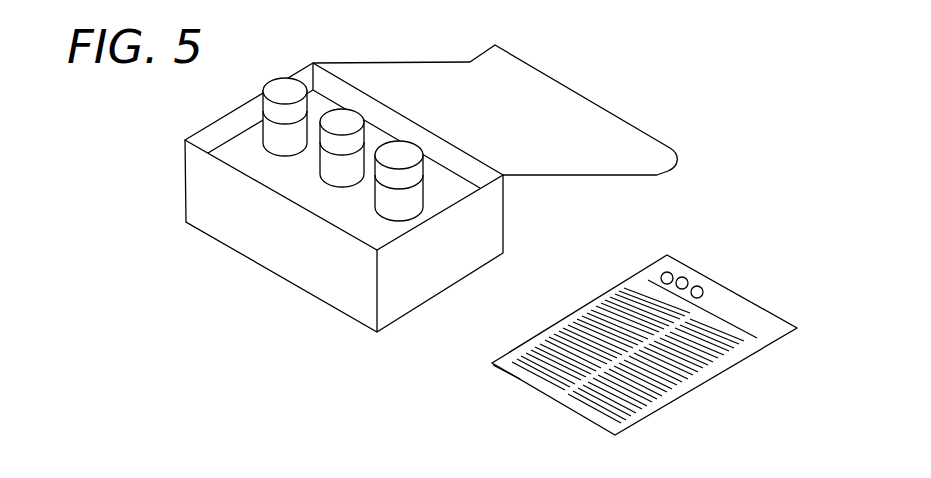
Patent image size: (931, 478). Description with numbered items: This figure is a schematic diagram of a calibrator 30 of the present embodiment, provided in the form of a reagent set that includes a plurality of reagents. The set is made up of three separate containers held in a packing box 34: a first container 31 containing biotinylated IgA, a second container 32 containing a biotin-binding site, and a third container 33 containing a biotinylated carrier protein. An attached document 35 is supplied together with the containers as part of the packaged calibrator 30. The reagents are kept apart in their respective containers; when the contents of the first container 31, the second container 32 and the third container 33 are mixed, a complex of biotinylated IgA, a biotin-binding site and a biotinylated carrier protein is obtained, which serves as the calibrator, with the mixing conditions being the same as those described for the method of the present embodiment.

The calibrator 30 is at (707, 148).
The first container 31 is at (262, 141).
The second container 32 is at (323, 167).
The third container 33 is at (382, 200).
The packing box 34 is at (495, 220).
The attached document 35 is at (492, 363).